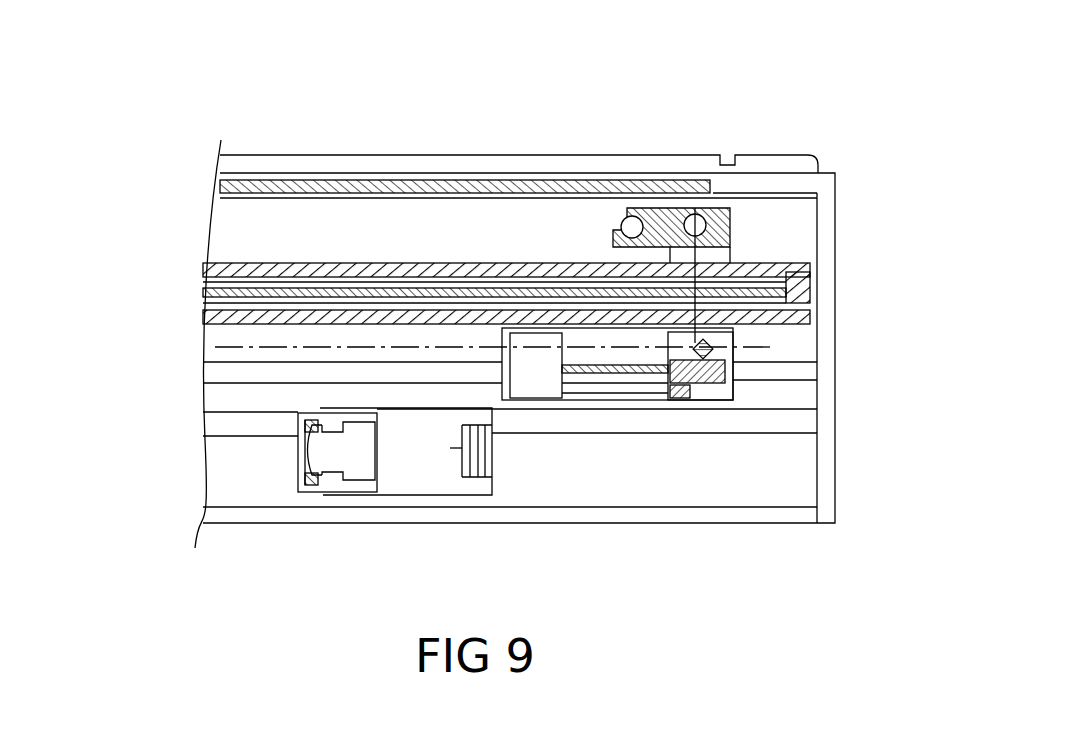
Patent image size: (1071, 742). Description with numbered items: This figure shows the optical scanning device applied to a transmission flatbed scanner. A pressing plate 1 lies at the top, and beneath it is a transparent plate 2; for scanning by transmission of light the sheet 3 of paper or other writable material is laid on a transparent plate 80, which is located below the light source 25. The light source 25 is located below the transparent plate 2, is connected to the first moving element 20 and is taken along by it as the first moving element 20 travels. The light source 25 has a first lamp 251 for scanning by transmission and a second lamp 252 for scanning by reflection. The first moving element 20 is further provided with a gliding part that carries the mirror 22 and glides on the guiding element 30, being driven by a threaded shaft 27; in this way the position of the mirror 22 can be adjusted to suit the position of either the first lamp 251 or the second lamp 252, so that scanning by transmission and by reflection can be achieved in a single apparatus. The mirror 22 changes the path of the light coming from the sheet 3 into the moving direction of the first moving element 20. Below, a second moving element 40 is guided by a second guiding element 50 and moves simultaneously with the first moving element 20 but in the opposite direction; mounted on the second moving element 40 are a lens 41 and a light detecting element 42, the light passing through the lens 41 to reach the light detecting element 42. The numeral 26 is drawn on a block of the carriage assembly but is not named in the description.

The pressing plate 1 is at (433, 168).
The transparent plate 2 is at (365, 180).
The sheet 3 is at (262, 263).
The first moving element 20 is at (658, 410).
The mirror 22 is at (710, 350).
The light source 25 is at (664, 206).
The first lamp 251 is at (695, 214).
The second lamp 252 is at (632, 216).
The holder block 26 is at (741, 407).
The threaded shaft 27 is at (600, 374).
The first guiding element 30 is at (227, 375).
The second moving element 40 is at (388, 500).
The lens 41 is at (318, 493).
The light detecting element 42 is at (482, 488).
The second guiding element 50 is at (227, 425).
The transparent plate 80 is at (426, 244).